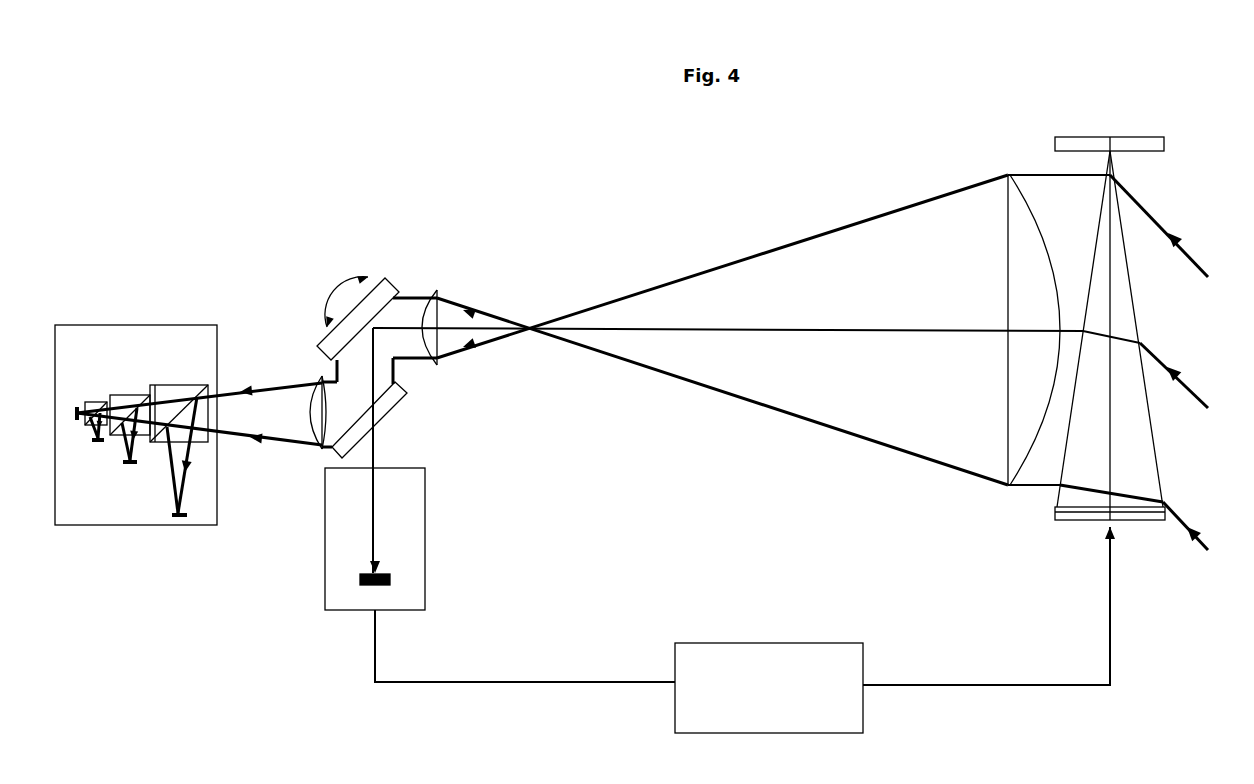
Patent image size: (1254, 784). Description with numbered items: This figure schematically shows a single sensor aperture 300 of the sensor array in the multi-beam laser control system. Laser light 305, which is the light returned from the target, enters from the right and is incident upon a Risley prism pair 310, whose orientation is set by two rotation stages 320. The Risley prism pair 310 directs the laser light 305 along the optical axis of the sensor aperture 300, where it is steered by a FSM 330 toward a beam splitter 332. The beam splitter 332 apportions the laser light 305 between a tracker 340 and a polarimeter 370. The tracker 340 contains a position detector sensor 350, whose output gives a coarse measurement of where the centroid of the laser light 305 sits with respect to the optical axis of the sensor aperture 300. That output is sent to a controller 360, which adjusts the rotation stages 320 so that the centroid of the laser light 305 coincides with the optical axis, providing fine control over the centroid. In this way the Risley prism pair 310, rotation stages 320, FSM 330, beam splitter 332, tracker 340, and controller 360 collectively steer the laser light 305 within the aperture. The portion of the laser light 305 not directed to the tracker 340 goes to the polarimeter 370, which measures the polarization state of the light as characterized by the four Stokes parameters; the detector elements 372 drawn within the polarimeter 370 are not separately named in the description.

The sensor aperture 300 is at (590, 188).
The laser light 305 is at (1142, 200).
The Risley prism pair 310 is at (1105, 217).
The rotation stages 320 is at (1065, 513).
The FSM 330 is at (397, 290).
The beam splitter 332 is at (397, 402).
The tracker 340 is at (420, 525).
The position detector sensor 350 is at (390, 582).
The controller 360 is at (776, 647).
The polarimeter 370 is at (122, 389).
The detector 372 is at (93, 441).